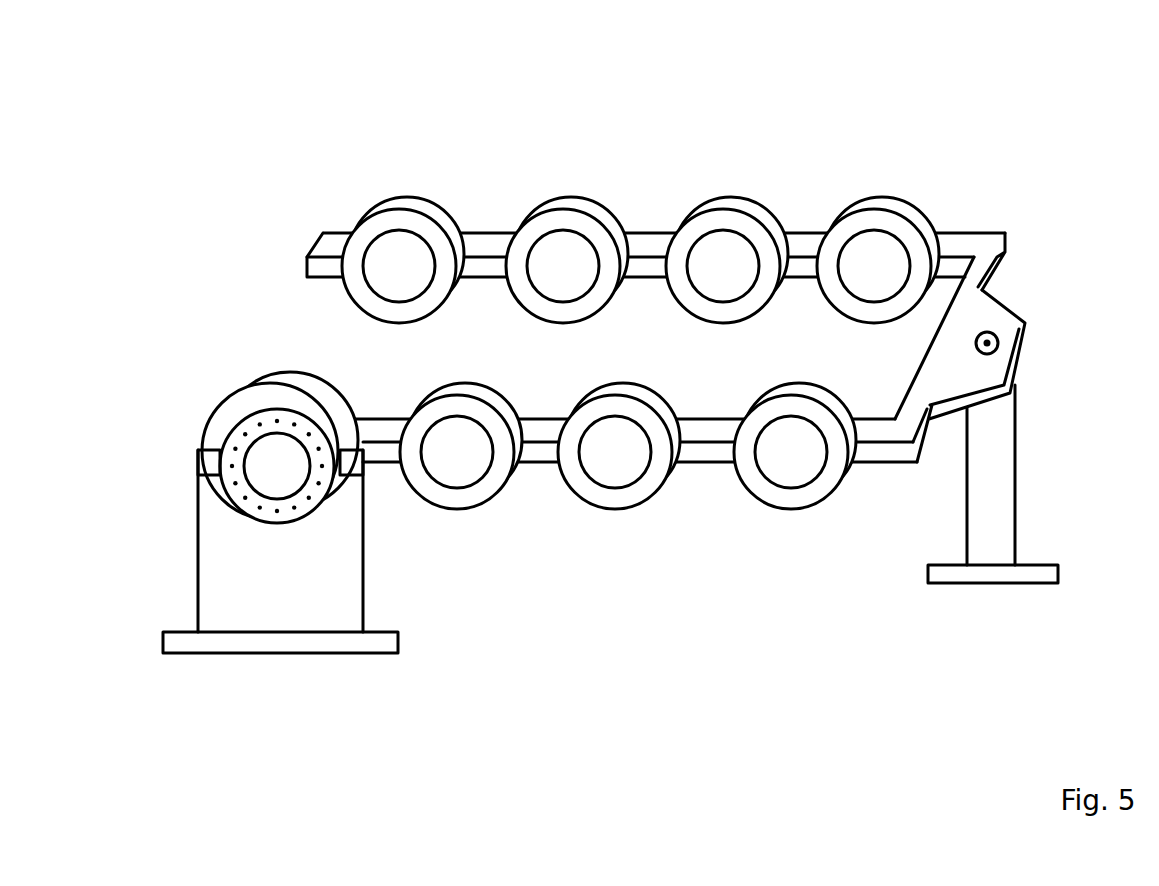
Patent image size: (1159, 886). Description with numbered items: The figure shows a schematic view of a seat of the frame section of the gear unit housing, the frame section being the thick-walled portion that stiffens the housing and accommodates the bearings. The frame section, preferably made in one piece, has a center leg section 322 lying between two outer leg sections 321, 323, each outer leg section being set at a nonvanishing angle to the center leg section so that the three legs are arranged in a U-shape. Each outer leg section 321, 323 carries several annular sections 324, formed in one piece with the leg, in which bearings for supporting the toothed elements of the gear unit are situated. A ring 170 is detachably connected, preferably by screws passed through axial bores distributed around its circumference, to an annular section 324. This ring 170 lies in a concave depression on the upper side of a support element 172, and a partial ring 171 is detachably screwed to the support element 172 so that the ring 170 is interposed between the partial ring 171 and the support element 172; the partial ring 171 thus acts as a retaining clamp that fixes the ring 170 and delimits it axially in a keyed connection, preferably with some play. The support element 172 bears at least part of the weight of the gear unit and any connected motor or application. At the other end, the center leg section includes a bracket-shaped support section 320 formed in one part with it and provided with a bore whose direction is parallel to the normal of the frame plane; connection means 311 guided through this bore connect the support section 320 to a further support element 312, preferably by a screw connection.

The ring 170 is at (253, 428).
The partial ring 171 is at (220, 432).
The support element 172 is at (212, 492).
The connection means 311 is at (990, 343).
The support element 312 is at (993, 472).
The support section 320 is at (1025, 367).
The outer leg section 321 is at (880, 466).
The center leg section 322 is at (1007, 270).
The outer leg section 323 is at (337, 231).
The annular section 324 is at (867, 188).